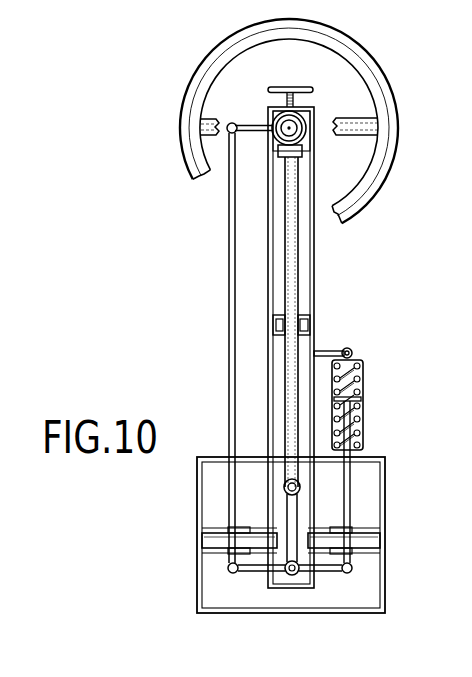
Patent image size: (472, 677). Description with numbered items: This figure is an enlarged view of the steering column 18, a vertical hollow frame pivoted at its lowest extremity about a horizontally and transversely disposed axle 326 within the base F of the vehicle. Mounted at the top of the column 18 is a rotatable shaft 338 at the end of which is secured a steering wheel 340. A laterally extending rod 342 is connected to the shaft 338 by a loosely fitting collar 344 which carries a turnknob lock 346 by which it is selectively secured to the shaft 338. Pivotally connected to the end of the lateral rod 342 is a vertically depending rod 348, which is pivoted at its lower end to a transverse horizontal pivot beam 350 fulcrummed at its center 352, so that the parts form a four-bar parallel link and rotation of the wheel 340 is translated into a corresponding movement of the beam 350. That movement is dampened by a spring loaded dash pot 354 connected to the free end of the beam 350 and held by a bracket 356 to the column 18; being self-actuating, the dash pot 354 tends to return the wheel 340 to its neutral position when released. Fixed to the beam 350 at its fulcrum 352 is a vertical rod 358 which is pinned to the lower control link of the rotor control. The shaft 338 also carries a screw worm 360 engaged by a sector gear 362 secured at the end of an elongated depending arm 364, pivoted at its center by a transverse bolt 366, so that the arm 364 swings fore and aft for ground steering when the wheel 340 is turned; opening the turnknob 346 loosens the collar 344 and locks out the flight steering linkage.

The steering wheel 340 is at (200, 66).
The turnknob lock 346 is at (317, 57).
The steering column 18 is at (315, 273).
The screw worm 360 is at (271, 142).
The collar 344 is at (295, 122).
The rotatable shaft 338 is at (293, 131).
The laterally extending rod 342 is at (252, 126).
The sector gear 362 is at (280, 157).
The elongated depending arm 364 is at (285, 240).
The vertically depending rod 348 is at (229, 383).
The transverse bolt 366 is at (271, 326).
The bracket 356 is at (323, 347).
The spring loaded dash pot 354 is at (364, 427).
The vertical rod 358 is at (295, 508).
The fulcrum 352 is at (295, 575).
The transverse horizontal pivot beam 350 is at (247, 573).
The axle 326 is at (380, 540).
The base F is at (385, 592).